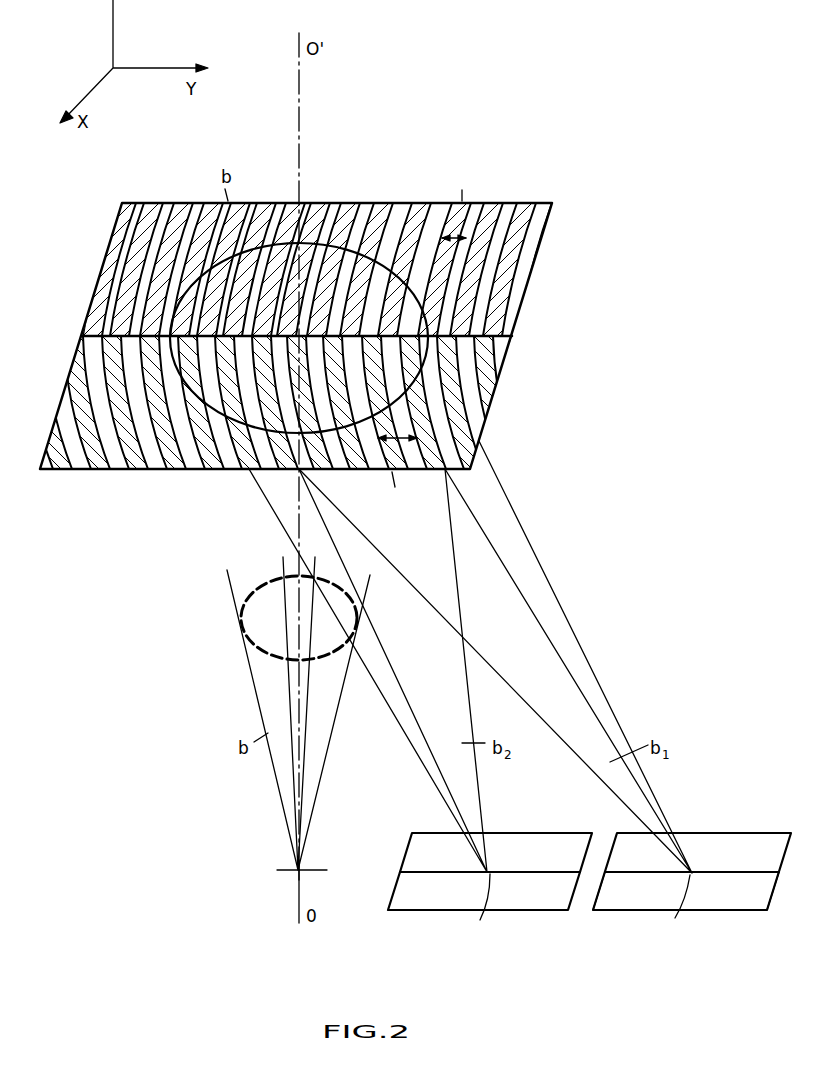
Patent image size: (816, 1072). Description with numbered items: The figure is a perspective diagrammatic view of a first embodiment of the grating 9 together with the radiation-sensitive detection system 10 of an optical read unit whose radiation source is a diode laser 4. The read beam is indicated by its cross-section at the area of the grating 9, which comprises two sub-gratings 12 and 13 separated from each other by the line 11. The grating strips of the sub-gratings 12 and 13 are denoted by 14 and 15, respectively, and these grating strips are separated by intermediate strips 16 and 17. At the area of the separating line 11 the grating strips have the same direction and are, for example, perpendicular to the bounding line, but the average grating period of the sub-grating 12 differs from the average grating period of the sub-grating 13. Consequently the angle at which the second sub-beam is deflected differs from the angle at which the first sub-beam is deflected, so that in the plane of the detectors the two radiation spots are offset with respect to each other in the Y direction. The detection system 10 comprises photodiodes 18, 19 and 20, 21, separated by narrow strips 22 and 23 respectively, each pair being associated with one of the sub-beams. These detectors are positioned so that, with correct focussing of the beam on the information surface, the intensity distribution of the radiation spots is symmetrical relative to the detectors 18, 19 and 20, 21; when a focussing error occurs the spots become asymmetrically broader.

The diode laser 4 is at (296, 876).
The grating 9 is at (402, 196).
The radiation-sensitive detection system 10 is at (577, 915).
The line 11 is at (80, 333).
The sub-grating 12 is at (112, 235).
The sub-grating 13 is at (63, 378).
The grating strips 14 is at (325, 201).
The grating strips 15 is at (240, 471).
The intermediate strips 16 is at (344, 203).
The intermediate strips 17 is at (208, 472).
The photodiode 18 is at (743, 842).
The photodiode 19 is at (742, 901).
The photodiode 20 is at (415, 855).
The photodiode 21 is at (400, 893).
The narrow strip 22 is at (707, 871).
The narrow strip 23 is at (395, 873).